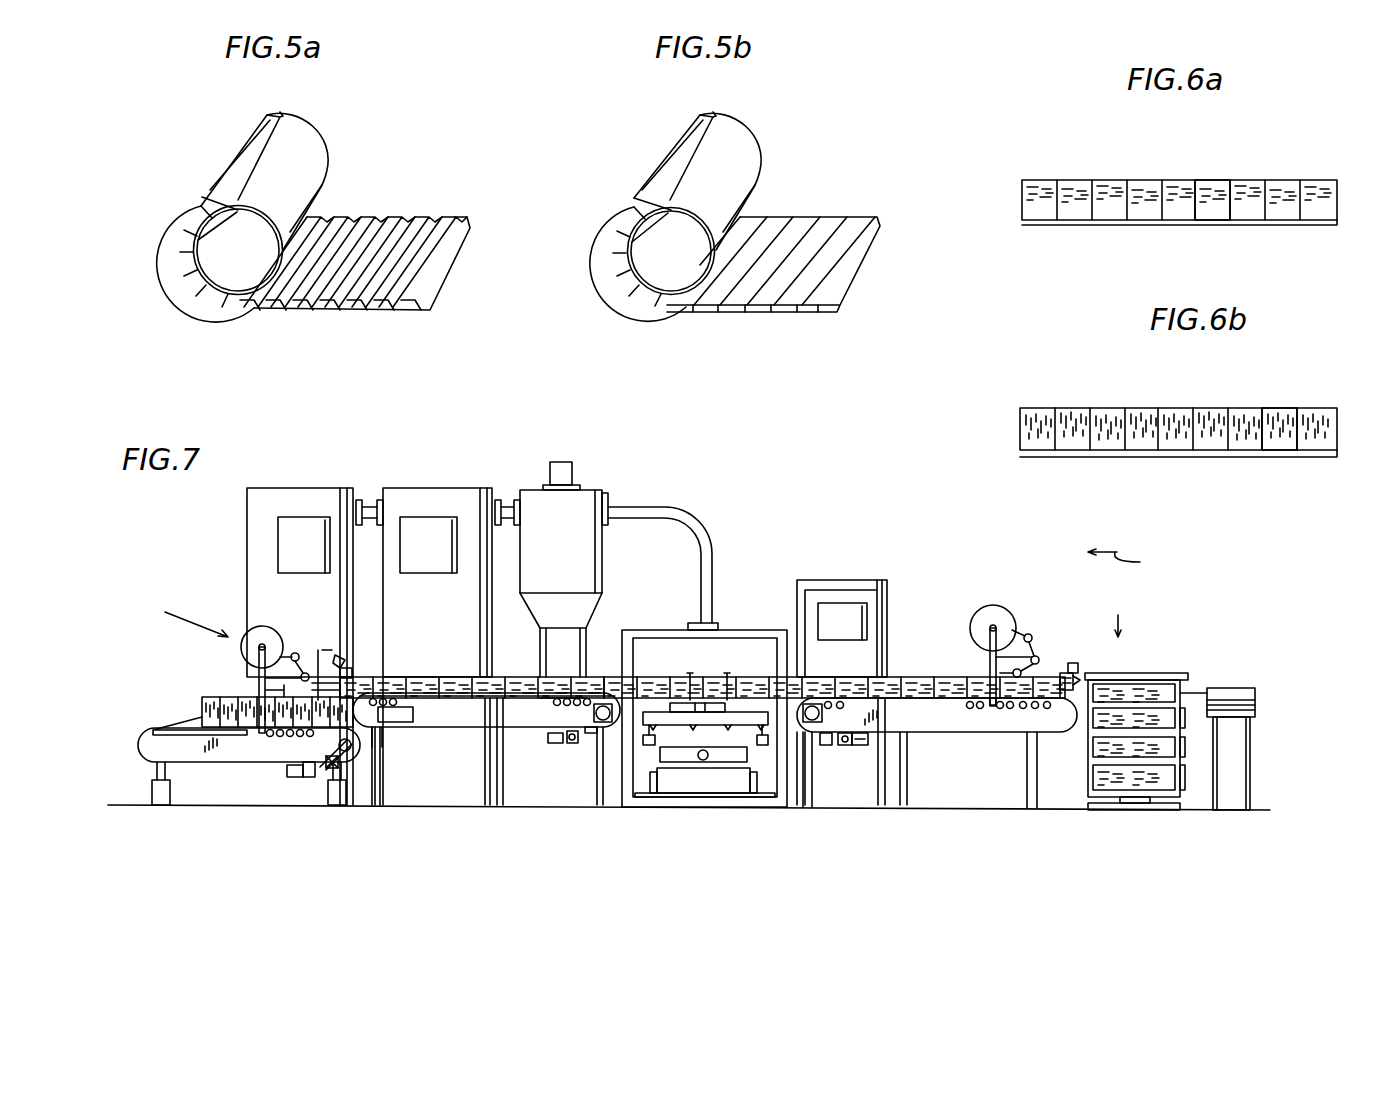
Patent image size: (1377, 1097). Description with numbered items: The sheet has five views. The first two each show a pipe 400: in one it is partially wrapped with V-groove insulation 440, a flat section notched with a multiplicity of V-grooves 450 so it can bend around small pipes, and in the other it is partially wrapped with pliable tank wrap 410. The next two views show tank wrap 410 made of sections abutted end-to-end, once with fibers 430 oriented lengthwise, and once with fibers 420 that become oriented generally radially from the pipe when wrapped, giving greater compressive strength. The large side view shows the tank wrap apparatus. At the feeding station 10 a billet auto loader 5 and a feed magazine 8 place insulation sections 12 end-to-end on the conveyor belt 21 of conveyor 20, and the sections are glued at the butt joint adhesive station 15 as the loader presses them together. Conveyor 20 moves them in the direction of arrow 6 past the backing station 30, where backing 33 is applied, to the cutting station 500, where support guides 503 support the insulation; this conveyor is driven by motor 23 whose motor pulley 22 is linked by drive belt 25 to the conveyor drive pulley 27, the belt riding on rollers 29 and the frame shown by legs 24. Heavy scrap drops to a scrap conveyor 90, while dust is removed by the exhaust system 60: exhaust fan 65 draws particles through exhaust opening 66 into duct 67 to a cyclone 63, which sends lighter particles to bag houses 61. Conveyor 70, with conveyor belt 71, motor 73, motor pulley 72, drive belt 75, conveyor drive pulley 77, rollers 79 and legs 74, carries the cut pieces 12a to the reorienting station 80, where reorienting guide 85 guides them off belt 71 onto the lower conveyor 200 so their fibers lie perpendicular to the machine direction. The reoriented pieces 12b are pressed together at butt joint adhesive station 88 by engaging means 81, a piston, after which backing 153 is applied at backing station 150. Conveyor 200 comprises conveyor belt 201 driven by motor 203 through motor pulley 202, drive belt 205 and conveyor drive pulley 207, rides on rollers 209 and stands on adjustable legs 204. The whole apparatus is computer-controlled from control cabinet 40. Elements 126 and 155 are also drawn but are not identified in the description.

In FIG. 5A, the pipe 400 is at (312, 177).
In FIG. 5B, the pipe 400 is at (736, 173).
In FIG. 5A, the V-groove insulation 440 is at (237, 158).
In FIG. 5A, the V-grooves 450 is at (454, 209).
In FIG. 5B, the tank wrap 410 is at (663, 157).
In FIG. 6A, the tank wrap 410 is at (1075, 180).
In FIG. 6B, the tank wrap 410 is at (1073, 408).
In FIG. 6A, the fibers 430 is at (1212, 182).
In FIG. 6B, the fibers 420 is at (1283, 408).
In FIG. 7, the billet auto loader 5 is at (1233, 688).
In FIG. 7, the direction arrow 6 is at (1123, 562).
In FIG. 7, the feed magazine 8 is at (1141, 812).
In FIG. 7, the feeding station 10 is at (1120, 613).
In FIG. 7, the insulation sections 12 is at (937, 683).
In FIG. 7, the cut pieces 12a is at (567, 680).
In FIG. 7, the reoriented pieces 12b is at (377, 747).
In FIG. 7, the butt joint adhesive station 15 is at (1073, 661).
In FIG. 7, the conveyor 20 is at (990, 795).
In FIG. 7, the conveyor belt 21 is at (985, 708).
In FIG. 7, the motor pulley 22 is at (852, 745).
In FIG. 7, the motor 23 is at (868, 742).
In FIG. 7, the legs 24 is at (1033, 806).
In FIG. 7, the drive belt 25 is at (827, 745).
In FIG. 7, the conveyor drive pulley 27 is at (812, 723).
In FIG. 7, the rollers 29 is at (963, 706).
In FIG. 7, the backing station 30 is at (993, 603).
In FIG. 7, the backing 33 is at (1020, 632).
In FIG. 7, the control cabinet 40 is at (845, 575).
In FIG. 7, the exhaust system 60 is at (632, 539).
In FIG. 7, the bag houses 61 is at (298, 497).
In FIG. 7, the cyclone 63 is at (593, 500).
In FIG. 7, the exhaust fan 65 is at (715, 624).
In FIG. 7, the exhaust opening 66 is at (740, 758).
In FIG. 7, the duct 67 is at (697, 527).
In FIG. 7, the conveyor 70 is at (540, 797).
In FIG. 7, the conveyor belt 71 is at (430, 698).
In FIG. 7, the motor pulley 72 is at (604, 676).
In FIG. 7, the motor 73 is at (572, 745).
In FIG. 7, the legs 74 is at (498, 800).
In FIG. 7, the drive belt 75 is at (589, 735).
In FIG. 7, the conveyor drive pulley 77 is at (608, 723).
In FIG. 7, the rollers 79 is at (548, 708).
In FIG. 7, the reorienting station 80 is at (338, 660).
In FIG. 7, the engaging means 81 is at (398, 722).
In FIG. 7, the reorienting guide 85 is at (340, 663).
In FIG. 7, the butt joint adhesive station 88 is at (318, 652).
In FIG. 7, the scrap conveyor 90 is at (657, 780).
In FIG. 7, the blank magazine 126 is at (202, 700).
In FIG. 7, the backing station 150 is at (186, 615).
In FIG. 7, the backing 153 is at (290, 655).
In FIG. 7, the supply reel 155 is at (255, 640).
In FIG. 7, the conveyor 200 is at (239, 833).
In FIG. 7, the conveyor belt 201 is at (155, 727).
In FIG. 7, the motor pulley 202 is at (305, 775).
In FIG. 7, the motor 203 is at (288, 770).
In FIG. 7, the adjustable legs 204 is at (152, 790).
In FIG. 7, the drive belt 205 is at (330, 768).
In FIG. 7, the conveyor drive pulley 207 is at (347, 752).
In FIG. 7, the rollers 209 is at (300, 737).
In FIG. 7, the cutting station 500 is at (704, 752).
In FIG. 7, the support guides 503 is at (675, 680).